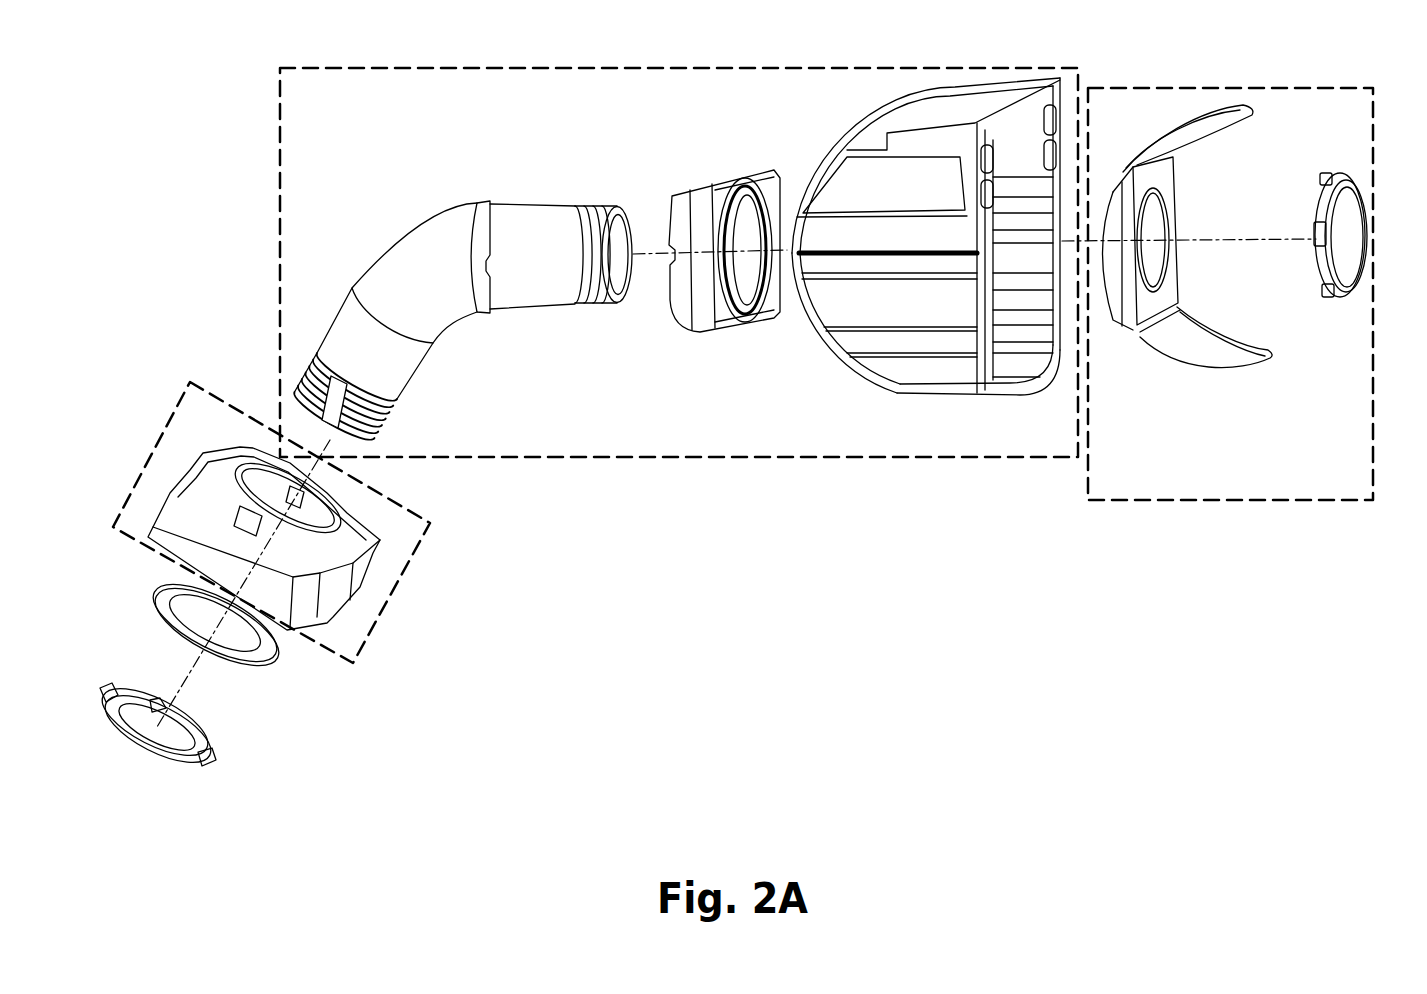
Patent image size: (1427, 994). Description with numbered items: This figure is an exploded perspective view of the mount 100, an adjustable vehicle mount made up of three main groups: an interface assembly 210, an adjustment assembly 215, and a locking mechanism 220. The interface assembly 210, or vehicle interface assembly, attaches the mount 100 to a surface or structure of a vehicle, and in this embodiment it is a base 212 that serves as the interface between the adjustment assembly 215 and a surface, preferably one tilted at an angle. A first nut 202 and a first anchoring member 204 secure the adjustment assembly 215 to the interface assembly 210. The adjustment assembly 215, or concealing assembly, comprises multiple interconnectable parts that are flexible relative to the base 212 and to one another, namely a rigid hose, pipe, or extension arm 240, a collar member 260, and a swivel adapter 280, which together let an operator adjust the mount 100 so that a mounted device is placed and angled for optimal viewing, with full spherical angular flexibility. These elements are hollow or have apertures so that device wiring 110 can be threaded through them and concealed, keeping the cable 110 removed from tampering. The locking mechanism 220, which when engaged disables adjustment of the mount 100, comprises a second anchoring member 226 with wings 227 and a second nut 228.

The mount 100 is at (1040, 764).
The device wiring 110 is at (647, 250).
The first nut 202 is at (207, 737).
The first anchoring member 204 is at (270, 647).
The interface assembly 210 is at (393, 590).
The base 212 is at (370, 517).
The adjustment assembly 215 is at (770, 460).
The locking mechanism 220 is at (1215, 503).
The second anchoring member 226 is at (1150, 300).
The wings 227 is at (1222, 113).
The second nut 228 is at (1325, 300).
The extension arm 240 is at (343, 323).
The collar member 260 is at (715, 300).
The swivel adapter 280 is at (947, 367).